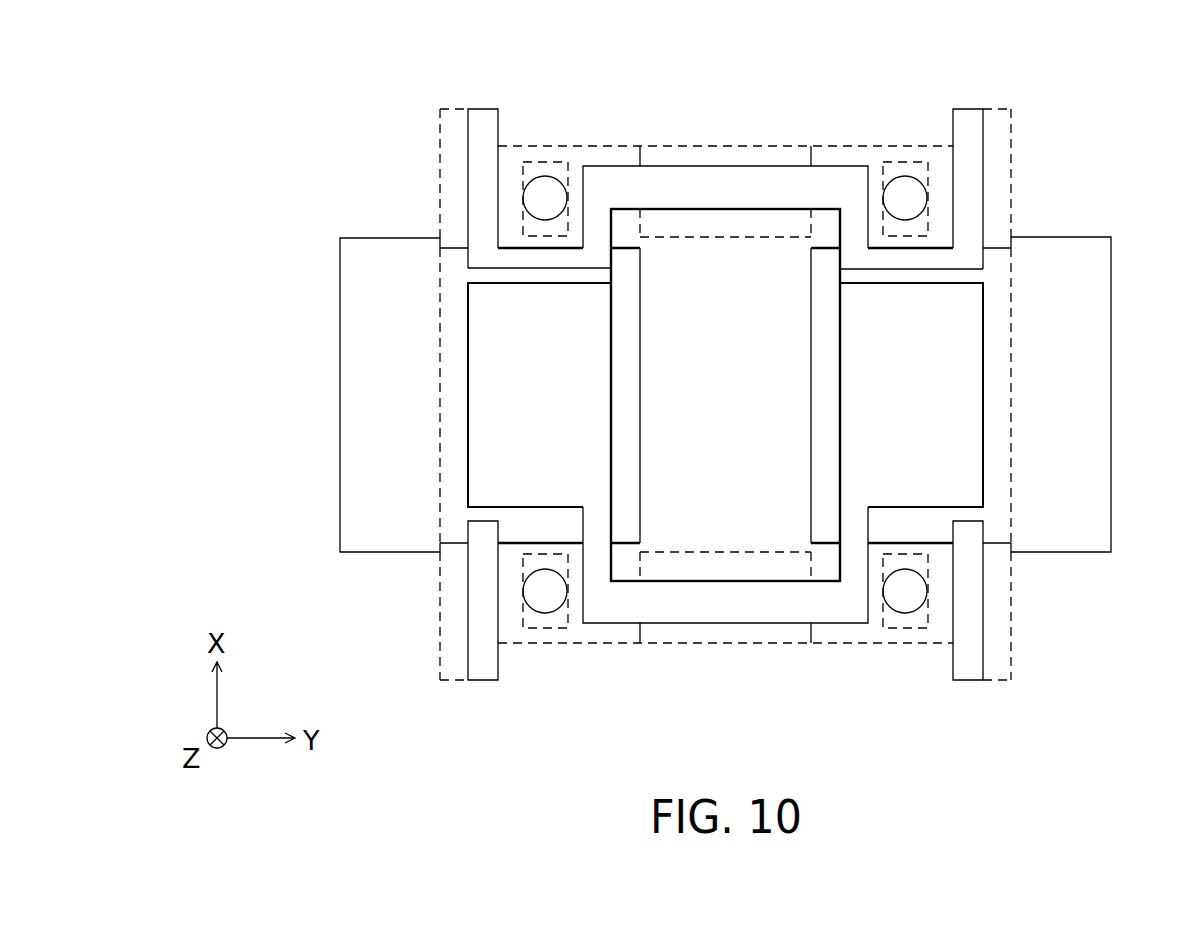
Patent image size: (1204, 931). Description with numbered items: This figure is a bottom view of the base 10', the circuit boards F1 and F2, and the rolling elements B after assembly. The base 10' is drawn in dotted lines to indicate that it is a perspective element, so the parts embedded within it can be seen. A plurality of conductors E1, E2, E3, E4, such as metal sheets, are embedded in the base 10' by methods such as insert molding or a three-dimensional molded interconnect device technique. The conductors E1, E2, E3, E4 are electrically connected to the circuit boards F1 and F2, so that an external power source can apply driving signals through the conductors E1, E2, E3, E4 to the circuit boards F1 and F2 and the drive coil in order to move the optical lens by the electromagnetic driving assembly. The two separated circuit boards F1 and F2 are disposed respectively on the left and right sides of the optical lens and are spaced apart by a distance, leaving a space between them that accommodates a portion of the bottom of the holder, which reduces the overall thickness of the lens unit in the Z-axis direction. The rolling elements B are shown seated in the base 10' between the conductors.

The base 10' is at (781, 394).
The rolling element B is at (546, 198).
The conductor E1 is at (726, 603).
The conductor E2 is at (726, 188).
The conductor E3 is at (968, 616).
The conductor E4 is at (483, 618).
The circuit board F1 is at (1070, 395).
The circuit board F2 is at (378, 395).